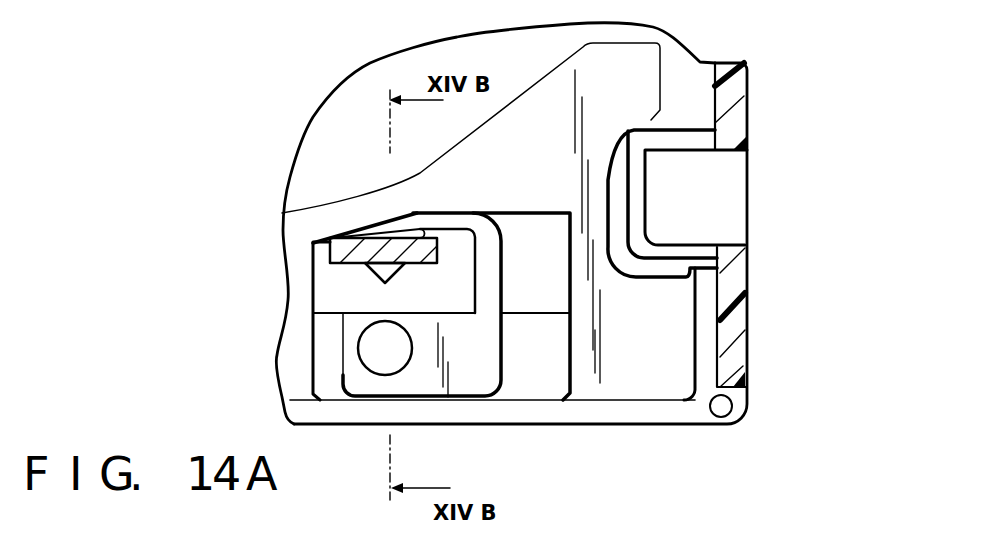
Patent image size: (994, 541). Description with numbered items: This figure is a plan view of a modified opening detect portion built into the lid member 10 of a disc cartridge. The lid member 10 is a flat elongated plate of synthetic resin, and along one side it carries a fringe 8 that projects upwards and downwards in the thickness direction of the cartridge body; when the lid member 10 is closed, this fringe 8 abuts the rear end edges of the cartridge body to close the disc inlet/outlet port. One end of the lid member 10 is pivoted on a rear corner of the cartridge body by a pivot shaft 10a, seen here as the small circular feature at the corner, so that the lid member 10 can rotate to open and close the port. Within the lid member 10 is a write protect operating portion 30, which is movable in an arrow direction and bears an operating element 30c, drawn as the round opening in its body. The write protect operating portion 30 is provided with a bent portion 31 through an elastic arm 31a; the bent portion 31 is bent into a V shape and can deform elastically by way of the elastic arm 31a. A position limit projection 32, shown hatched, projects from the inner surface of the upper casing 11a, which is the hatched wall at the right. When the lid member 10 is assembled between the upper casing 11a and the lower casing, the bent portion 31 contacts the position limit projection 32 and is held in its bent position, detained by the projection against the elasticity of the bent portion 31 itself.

The fringe 8 is at (553, 412).
The lid member 10 is at (342, 427).
The pivot shaft 10a is at (721, 412).
The upper casing 11a is at (740, 325).
The write protect operating portion 30 is at (387, 305).
The operating element 30c is at (368, 351).
The bent portion 31 is at (410, 233).
The elastic arm 31a is at (492, 244).
The position limit projection 32 is at (340, 237).